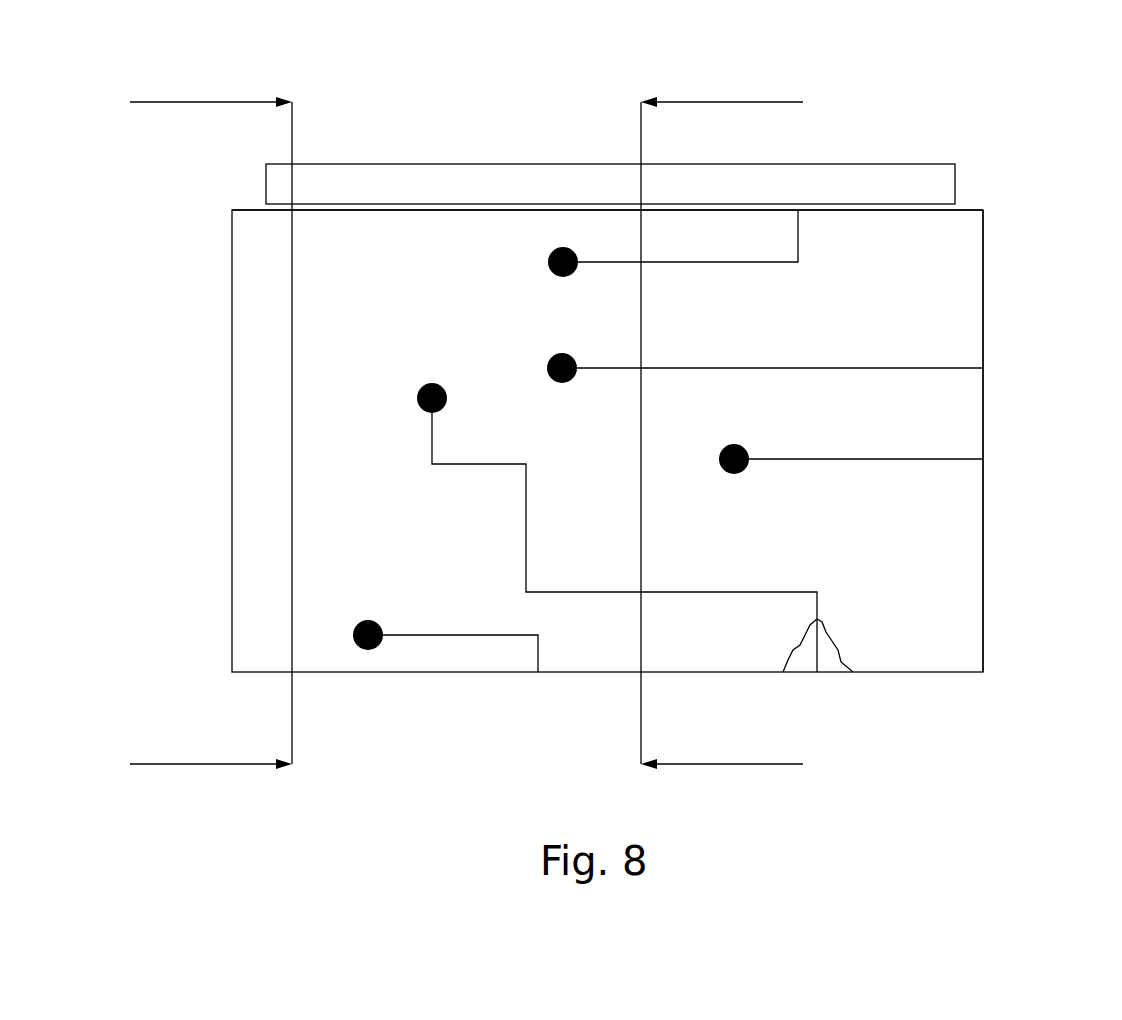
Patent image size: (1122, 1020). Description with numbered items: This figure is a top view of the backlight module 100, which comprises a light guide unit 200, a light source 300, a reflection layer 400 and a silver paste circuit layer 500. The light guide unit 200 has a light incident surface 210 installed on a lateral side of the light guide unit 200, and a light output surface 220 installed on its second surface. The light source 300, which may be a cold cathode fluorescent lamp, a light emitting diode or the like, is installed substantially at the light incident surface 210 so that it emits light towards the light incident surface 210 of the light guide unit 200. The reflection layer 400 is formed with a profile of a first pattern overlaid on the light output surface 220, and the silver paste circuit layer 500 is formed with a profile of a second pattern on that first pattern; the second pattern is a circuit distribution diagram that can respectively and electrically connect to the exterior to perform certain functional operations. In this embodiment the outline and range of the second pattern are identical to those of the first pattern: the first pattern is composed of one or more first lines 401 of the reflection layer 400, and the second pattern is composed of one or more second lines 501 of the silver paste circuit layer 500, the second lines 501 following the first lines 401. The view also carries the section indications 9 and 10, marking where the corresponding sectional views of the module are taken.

The backlight module 100 is at (1042, 76).
The section line 9 is at (198, 434).
The section line 10 is at (740, 434).
The light guide unit 200 is at (996, 258).
The light incident surface 210 is at (888, 205).
The light output surface 220 is at (958, 318).
The light source 300 is at (947, 183).
The reflection layer 400 is at (824, 662).
The first lines 401 is at (808, 637).
The silver paste circuit layer 500 is at (583, 606).
The second lines 501 is at (605, 260).